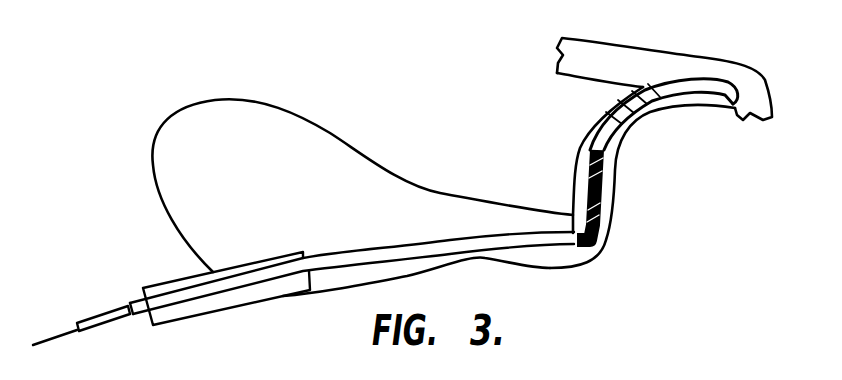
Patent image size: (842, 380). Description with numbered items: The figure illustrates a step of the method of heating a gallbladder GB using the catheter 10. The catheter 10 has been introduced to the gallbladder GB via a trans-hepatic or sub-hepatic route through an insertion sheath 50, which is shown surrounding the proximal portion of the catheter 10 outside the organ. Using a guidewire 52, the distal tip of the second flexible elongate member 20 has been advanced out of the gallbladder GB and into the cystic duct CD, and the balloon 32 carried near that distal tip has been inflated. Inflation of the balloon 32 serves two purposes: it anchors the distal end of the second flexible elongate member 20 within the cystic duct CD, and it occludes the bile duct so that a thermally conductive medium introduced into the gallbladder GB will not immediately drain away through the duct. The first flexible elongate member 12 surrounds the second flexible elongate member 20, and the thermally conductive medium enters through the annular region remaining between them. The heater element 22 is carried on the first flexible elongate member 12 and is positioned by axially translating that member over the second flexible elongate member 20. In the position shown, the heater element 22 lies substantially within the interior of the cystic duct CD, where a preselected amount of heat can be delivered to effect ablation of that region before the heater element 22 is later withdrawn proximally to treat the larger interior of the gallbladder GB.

The gallbladder GB is at (361, 151).
The cystic duct CD is at (587, 135).
The guidewire 52 is at (699, 78).
The catheter 10 is at (303, 273).
The first flexible elongate member 12 is at (350, 251).
The insertion sheath 50 is at (202, 318).
The second flexible elongate member 20 is at (660, 113).
The balloon 32 is at (637, 140).
The heater element 22 is at (606, 205).